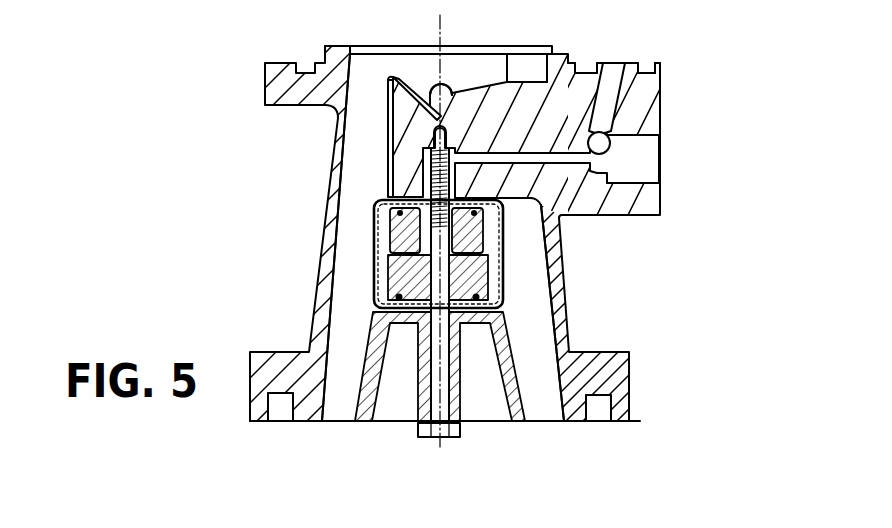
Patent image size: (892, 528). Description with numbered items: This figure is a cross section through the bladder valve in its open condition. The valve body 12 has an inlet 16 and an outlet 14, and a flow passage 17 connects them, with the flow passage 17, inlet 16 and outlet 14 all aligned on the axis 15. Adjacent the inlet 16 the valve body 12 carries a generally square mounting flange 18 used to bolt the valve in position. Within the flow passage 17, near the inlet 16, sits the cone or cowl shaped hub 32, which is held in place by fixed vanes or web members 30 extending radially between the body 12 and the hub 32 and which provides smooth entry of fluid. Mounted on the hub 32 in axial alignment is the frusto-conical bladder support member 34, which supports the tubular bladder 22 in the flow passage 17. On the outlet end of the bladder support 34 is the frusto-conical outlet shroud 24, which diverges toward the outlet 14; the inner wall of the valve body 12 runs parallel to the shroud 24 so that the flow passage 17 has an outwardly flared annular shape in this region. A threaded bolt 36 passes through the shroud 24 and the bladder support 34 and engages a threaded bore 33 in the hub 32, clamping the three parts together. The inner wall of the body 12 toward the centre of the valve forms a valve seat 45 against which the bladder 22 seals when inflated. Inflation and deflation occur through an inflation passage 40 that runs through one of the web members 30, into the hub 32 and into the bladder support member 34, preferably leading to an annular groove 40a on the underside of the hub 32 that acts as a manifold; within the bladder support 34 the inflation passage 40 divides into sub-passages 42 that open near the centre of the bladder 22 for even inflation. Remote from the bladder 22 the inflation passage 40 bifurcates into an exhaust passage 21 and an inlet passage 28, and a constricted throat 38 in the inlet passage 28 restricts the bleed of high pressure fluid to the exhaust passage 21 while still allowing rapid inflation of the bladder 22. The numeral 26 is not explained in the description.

The valve body 12 is at (343, 279).
The outlet 14 is at (322, 412).
The axis 15 is at (453, 62).
The inlet 16 is at (367, 55).
The flow passage 17 is at (357, 220).
The mounting flange 18 is at (265, 84).
The exhaust passage 21 is at (650, 172).
The tubular bladder 22 is at (507, 262).
The outlet shroud 24 is at (520, 378).
The mounting recess 26 is at (603, 412).
The inlet passage 28 is at (618, 72).
The web members 30 is at (503, 80).
The hub 32 is at (413, 123).
The threaded bore 33 is at (407, 163).
The bladder support member 34 is at (505, 322).
The threaded bolt 36 is at (462, 437).
The constricted throat 38 is at (640, 162).
The inflation passage 40 is at (568, 63).
The annular groove 40a is at (388, 193).
The sub-passages 42 is at (378, 238).
The valve seat 45 is at (343, 284).